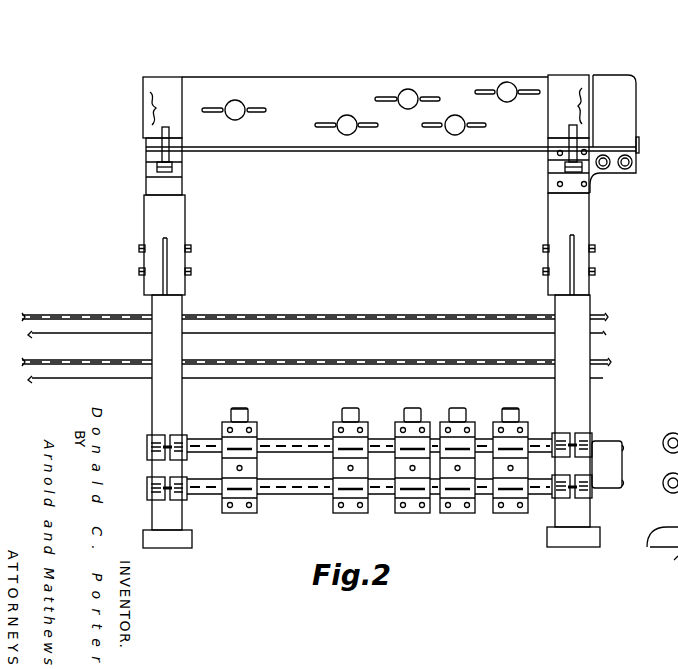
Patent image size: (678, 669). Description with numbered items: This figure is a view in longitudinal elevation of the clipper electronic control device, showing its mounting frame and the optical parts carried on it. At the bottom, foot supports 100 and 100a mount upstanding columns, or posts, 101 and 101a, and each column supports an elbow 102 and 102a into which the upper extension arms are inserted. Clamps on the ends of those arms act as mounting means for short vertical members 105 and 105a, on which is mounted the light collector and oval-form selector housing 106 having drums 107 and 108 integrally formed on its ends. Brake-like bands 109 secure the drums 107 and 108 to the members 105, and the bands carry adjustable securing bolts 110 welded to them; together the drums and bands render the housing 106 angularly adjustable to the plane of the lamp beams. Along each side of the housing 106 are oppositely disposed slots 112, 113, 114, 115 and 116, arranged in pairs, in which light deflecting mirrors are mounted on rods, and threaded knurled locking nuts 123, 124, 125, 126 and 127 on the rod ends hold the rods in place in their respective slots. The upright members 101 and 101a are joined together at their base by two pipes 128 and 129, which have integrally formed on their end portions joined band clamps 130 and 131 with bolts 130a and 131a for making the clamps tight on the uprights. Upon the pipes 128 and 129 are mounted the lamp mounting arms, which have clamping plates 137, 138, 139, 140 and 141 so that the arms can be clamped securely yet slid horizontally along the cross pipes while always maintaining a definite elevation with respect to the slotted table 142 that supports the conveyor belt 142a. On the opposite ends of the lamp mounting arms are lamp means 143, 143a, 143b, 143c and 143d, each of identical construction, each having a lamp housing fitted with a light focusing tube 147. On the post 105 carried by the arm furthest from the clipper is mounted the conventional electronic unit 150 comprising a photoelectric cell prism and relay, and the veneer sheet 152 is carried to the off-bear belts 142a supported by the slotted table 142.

The foot support 100 is at (575, 541).
The foot support 100a is at (174, 546).
The upstanding column 101 is at (586, 306).
The upstanding column 101a is at (165, 383).
The elbow 102 is at (555, 220).
The elbow 102a is at (145, 220).
The short vertical member 105 is at (552, 190).
The short vertical member 105a is at (180, 187).
The light collector and selector housing 106 is at (296, 86).
The drum 107 is at (581, 93).
The drum 108 is at (150, 112).
The brake-like band 109 is at (150, 129).
The adjustable securing bolt 110 is at (158, 150).
The slot 112 is at (485, 90).
The slot 113 is at (475, 123).
The slot 114 is at (389, 96).
The slot 115 is at (322, 123).
The slot 116 is at (213, 108).
The knurled locking nut 123 is at (509, 88).
The knurled locking nut 124 is at (455, 135).
The knurled locking nut 125 is at (410, 92).
The knurled locking nut 126 is at (347, 115).
The knurled locking nut 127 is at (236, 101).
The pipe 128 is at (297, 444).
The pipe 129 is at (295, 492).
The band clamp 130 is at (157, 433).
The bolt 130a is at (178, 440).
The band clamp 131 is at (173, 480).
The bolt 131a is at (185, 490).
The clamping plate 137 is at (511, 509).
The clamping plate 138 is at (458, 509).
The clamping plate 139 is at (412, 509).
The clamping plate 140 is at (353, 509).
The clamping plate 141 is at (245, 508).
The slotted table 142 is at (63, 370).
The conveyor belt 142a is at (108, 330).
The lamp means 143 is at (515, 401).
The lamp means 143a is at (460, 401).
The lamp means 143b is at (412, 401).
The lamp means 143c is at (352, 401).
The lamp means 143d is at (252, 405).
The light focusing tube 147 is at (248, 414).
The electronic unit 150 is at (624, 115).
The veneer sheet 152 is at (85, 316).